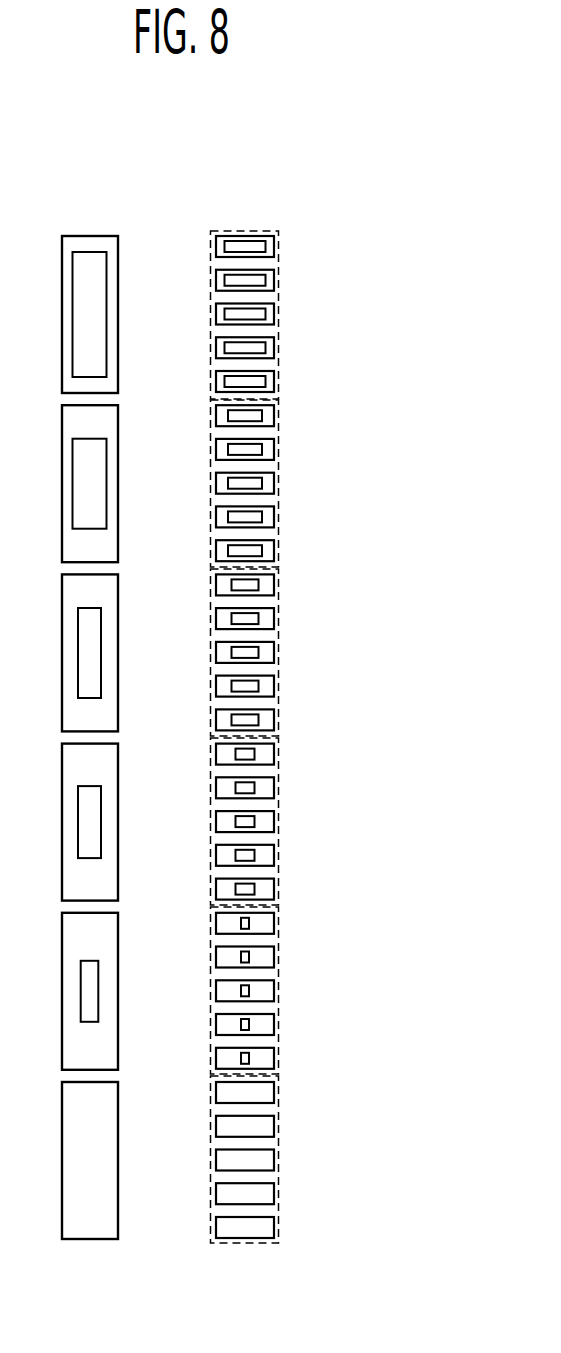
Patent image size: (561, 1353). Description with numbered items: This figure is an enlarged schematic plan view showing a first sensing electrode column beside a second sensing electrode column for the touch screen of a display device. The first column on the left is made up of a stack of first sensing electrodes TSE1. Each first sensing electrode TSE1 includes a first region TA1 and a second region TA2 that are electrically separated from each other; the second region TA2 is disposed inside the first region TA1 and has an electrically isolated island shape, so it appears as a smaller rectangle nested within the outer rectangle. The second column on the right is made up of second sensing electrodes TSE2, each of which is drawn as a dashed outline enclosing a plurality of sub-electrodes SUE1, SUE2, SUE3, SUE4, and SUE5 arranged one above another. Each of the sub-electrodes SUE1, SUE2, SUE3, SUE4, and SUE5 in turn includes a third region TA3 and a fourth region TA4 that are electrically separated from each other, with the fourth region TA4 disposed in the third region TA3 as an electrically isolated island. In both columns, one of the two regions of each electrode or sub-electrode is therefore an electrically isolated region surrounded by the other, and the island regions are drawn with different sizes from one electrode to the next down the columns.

The first sensing electrode TSE1 is at (146, 170).
The first region TA1 is at (76, 240).
The second region TA2 is at (98, 262).
The second sensing electrode TSE2 is at (417, 240).
The sub-electrode SUE1 is at (352, 226).
The sub-electrode SUE2 is at (291, 280).
The sub-electrode SUE3 is at (291, 314).
The sub-electrode SUE4 is at (291, 348).
The sub-electrode SUE5 is at (291, 382).
The third region TA3 is at (268, 239).
The fourth region TA4 is at (258, 249).